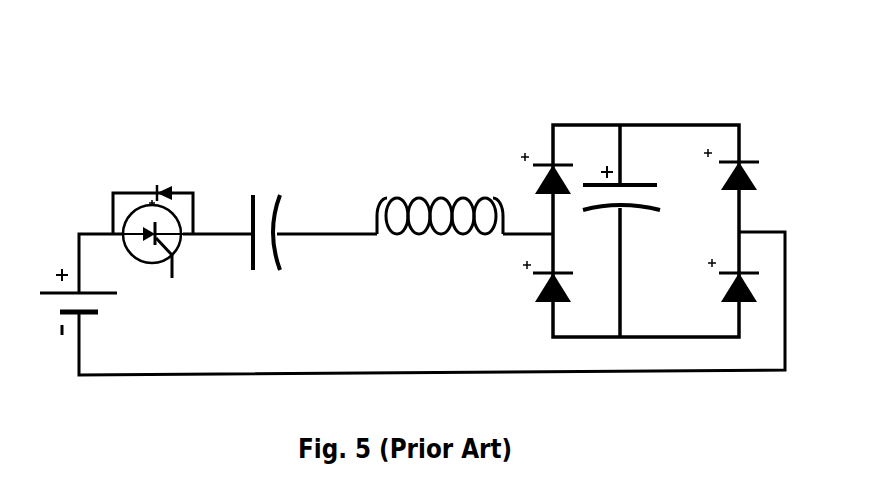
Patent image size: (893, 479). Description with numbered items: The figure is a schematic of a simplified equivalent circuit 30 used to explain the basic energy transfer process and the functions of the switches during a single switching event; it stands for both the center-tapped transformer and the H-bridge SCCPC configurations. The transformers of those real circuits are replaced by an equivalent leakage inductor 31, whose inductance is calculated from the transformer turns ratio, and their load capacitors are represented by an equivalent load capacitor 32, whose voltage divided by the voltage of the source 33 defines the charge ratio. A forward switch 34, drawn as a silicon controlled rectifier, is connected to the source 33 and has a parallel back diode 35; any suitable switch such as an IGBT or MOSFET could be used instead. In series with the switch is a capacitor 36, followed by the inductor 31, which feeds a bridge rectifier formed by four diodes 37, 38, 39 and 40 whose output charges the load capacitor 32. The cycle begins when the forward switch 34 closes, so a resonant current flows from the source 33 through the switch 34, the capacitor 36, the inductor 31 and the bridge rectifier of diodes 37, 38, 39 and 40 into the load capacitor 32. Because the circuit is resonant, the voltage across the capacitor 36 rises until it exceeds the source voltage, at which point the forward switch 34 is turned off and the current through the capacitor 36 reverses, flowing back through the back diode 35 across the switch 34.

The simplified equivalent circuit 30 is at (347, 114).
The equivalent leakage inductor 31 is at (447, 189).
The equivalent load capacitor 32 is at (664, 196).
The voltage source 33 is at (49, 282).
The forward switch 34 is at (189, 256).
The back diode 35 is at (160, 176).
The capacitor 36 is at (270, 184).
The diode 37 is at (545, 159).
The diode 38 is at (759, 180).
The diode 39 is at (540, 301).
The diode 40 is at (722, 285).